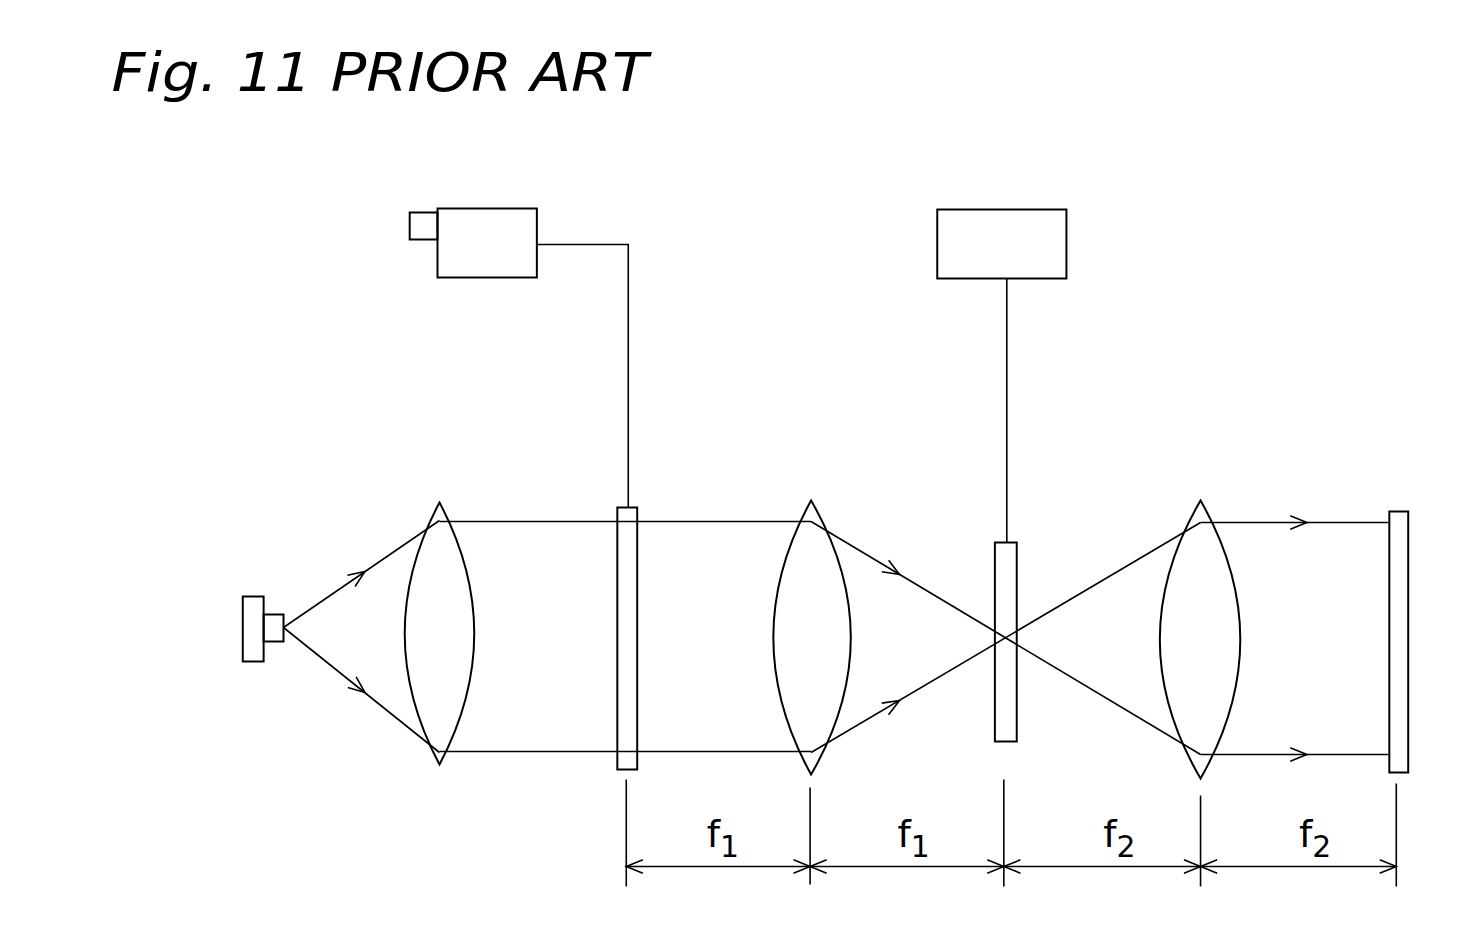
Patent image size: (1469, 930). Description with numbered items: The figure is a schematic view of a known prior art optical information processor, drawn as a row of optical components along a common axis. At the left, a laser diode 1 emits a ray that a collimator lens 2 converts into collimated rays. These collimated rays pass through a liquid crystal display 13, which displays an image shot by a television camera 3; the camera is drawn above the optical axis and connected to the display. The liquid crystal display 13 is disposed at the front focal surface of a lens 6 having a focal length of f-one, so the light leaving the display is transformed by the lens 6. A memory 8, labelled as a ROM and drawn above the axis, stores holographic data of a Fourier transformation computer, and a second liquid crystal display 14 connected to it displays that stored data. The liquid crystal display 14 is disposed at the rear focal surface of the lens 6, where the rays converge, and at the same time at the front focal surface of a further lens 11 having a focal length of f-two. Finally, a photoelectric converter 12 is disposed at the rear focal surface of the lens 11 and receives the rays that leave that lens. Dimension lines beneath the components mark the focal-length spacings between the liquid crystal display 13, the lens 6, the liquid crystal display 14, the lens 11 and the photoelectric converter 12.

The laser diode 1 is at (245, 664).
The collimator lens 2 is at (437, 768).
The television camera 3 is at (477, 279).
The lens 6 is at (823, 517).
The memory 8 is at (1068, 238).
The lens 11 is at (1213, 520).
The photoelectric converter 12 is at (1408, 512).
The liquid crystal display 13 is at (645, 500).
The liquid crystal display 14 is at (1045, 520).